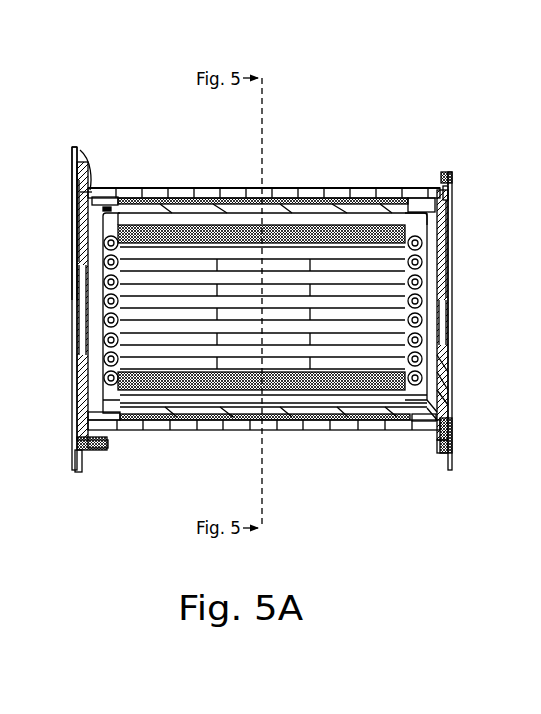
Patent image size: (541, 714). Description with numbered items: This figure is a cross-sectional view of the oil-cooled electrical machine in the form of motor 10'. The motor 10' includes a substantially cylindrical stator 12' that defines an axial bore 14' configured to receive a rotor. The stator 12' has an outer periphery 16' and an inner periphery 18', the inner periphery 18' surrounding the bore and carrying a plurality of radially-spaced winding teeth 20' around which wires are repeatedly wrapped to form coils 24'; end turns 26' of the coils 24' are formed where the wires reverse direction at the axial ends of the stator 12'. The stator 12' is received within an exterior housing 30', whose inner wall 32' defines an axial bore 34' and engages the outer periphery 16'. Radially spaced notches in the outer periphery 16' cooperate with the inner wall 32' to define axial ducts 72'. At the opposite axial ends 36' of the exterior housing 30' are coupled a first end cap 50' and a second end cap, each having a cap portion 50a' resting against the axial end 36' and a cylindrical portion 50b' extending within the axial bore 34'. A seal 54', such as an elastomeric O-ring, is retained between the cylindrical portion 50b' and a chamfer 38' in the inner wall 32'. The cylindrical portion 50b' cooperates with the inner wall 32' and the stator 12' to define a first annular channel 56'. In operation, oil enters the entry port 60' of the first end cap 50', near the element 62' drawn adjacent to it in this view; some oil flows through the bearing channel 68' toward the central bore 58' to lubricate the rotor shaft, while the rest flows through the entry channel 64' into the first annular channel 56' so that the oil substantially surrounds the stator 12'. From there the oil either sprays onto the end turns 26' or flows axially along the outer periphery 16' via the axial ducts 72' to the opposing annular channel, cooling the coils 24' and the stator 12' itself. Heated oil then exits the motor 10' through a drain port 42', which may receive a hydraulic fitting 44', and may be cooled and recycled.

The motor 10' is at (212, 63).
The stator 12' is at (263, 171).
The axial bore 14' is at (220, 322).
The outer periphery 16' is at (264, 161).
The inner periphery 18' is at (272, 186).
The winding teeth 20' is at (273, 363).
The coils 24' is at (265, 349).
The end turns 26' is at (302, 364).
The exterior housing 30' is at (264, 161).
The inner wall 32' is at (272, 168).
The axial bore 34' is at (266, 310).
The axial ends 36' is at (258, 142).
The chamfer 38' is at (91, 144).
The drain port 42' is at (474, 459).
The hydraulic fitting 44' is at (482, 435).
The first end cap 50' is at (488, 321).
The cap portion 50a' is at (478, 380).
The cylindrical portion 50b' is at (456, 461).
The seal 54' is at (423, 155).
The first annular channel 56' is at (425, 459).
The central bore 58' is at (469, 315).
The entry port 60' is at (478, 158).
The washer 62' is at (472, 182).
The entry channel 64' is at (269, 436).
The bearing channel 68' is at (479, 249).
The axial ducts 72' is at (264, 461).